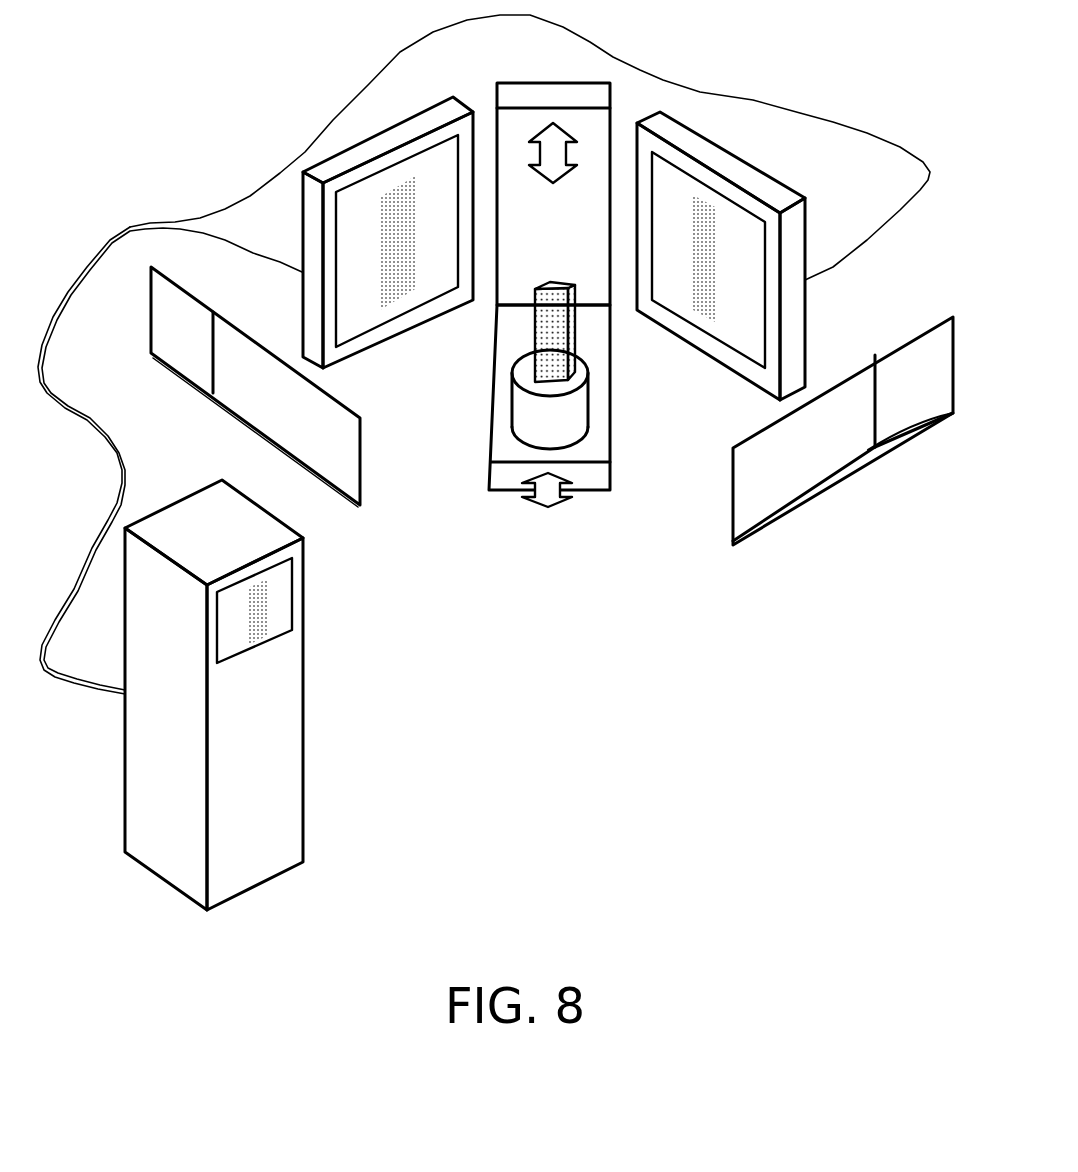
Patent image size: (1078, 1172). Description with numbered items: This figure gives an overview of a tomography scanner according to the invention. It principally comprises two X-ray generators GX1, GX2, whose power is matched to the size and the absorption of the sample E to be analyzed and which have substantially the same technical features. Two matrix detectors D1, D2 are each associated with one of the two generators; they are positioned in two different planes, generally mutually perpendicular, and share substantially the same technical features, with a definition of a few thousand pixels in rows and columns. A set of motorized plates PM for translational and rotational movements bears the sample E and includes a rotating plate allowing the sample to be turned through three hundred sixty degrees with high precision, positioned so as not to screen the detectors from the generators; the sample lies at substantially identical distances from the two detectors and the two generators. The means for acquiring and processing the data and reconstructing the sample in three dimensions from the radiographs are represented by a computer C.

The set of motorized plates PM is at (543, 97).
The sample E is at (552, 280).
The matrix detector D1 is at (805, 296).
The matrix detector D2 is at (303, 220).
The X-ray generator GX1 is at (151, 323).
The X-ray generator GX2 is at (733, 500).
The computer C is at (292, 715).